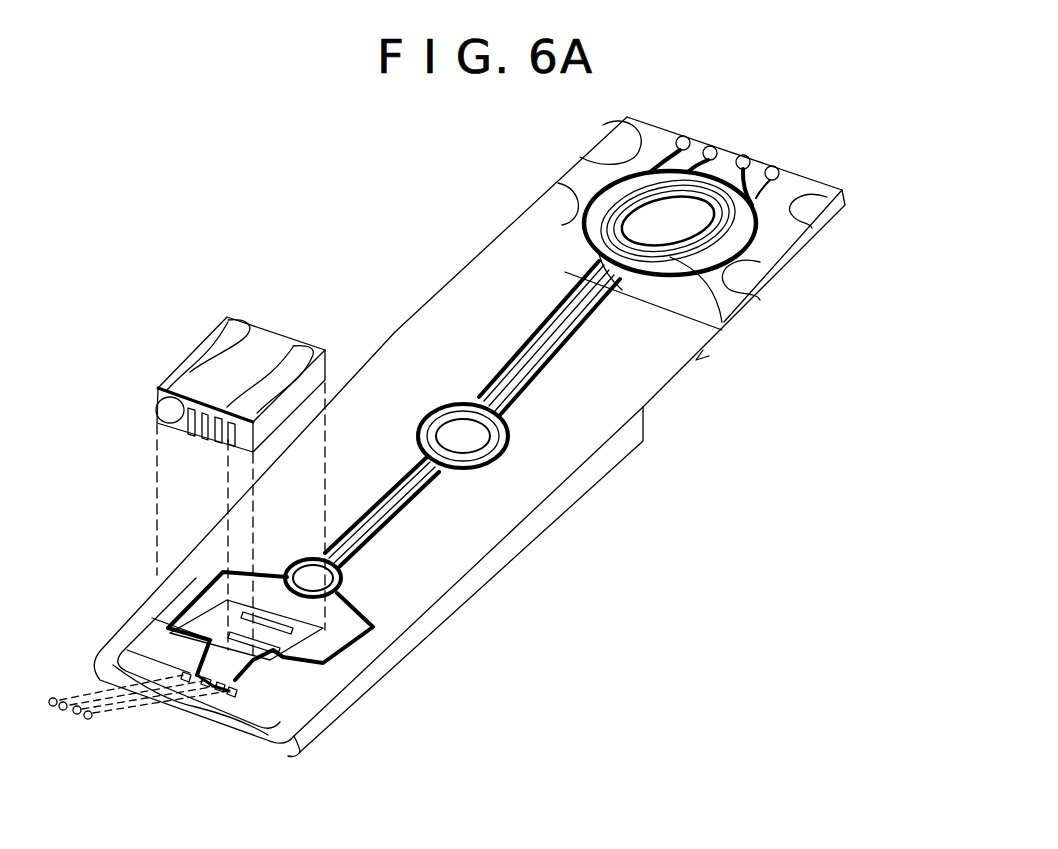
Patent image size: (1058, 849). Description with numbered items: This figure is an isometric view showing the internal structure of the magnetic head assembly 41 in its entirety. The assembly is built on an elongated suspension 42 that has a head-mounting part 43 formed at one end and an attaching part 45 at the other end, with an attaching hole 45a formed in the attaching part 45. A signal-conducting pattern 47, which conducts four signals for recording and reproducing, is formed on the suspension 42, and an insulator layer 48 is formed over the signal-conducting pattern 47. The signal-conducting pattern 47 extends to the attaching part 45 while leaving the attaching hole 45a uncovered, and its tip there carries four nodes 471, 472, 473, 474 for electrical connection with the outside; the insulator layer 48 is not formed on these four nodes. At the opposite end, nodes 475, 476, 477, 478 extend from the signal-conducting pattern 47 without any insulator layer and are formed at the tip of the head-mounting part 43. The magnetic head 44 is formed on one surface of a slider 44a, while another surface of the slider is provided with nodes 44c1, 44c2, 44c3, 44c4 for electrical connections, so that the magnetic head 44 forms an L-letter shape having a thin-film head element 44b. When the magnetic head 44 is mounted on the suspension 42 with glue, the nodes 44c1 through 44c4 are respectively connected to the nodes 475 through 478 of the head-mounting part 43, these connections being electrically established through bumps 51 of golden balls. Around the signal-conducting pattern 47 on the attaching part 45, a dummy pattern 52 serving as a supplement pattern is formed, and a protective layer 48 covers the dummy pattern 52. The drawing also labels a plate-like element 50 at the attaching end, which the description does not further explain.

The magnetic head assembly 41 is at (359, 193).
The suspension 42 is at (395, 332).
The head-mounting part 43 is at (270, 677).
The magnetic head 44 is at (195, 337).
The slider 44a is at (175, 357).
The thin-film head element 44b is at (160, 402).
The node 44c1 is at (189, 424).
The node 44c2 is at (204, 438).
The node 44c3 is at (218, 445).
The node 44c4 is at (232, 450).
The attaching part 45 is at (585, 215).
The attaching hole 45a is at (695, 225).
The signal-conducting pattern 47 is at (493, 543).
The insulator layer 48 is at (250, 626).
The node 471 is at (688, 137).
The node 472 is at (716, 148).
The node 473 is at (750, 157).
The node 474 is at (779, 172).
The node 475 is at (180, 673).
The node 476 is at (213, 673).
The node 477 is at (293, 737).
The node 478 is at (343, 730).
The head plate 50 is at (838, 218).
The bumps 51 is at (50, 707).
The dummy pattern 52 is at (573, 175).